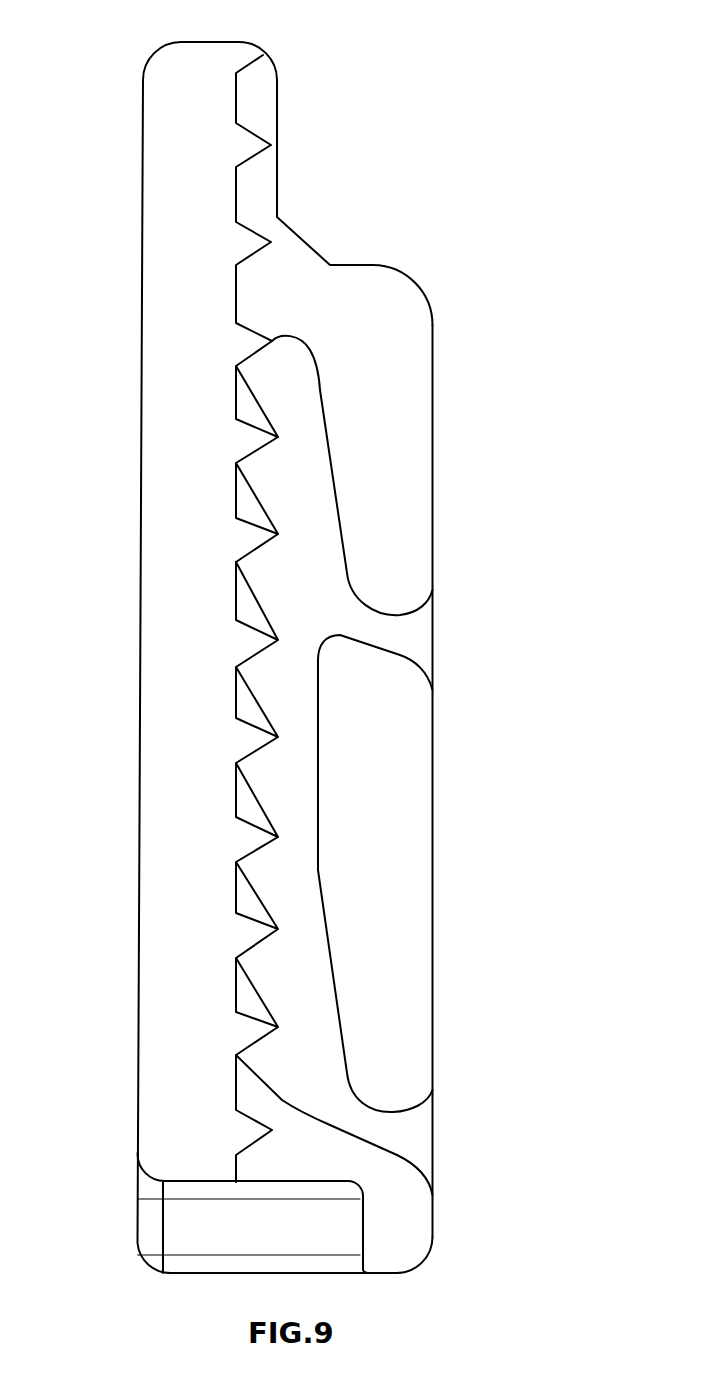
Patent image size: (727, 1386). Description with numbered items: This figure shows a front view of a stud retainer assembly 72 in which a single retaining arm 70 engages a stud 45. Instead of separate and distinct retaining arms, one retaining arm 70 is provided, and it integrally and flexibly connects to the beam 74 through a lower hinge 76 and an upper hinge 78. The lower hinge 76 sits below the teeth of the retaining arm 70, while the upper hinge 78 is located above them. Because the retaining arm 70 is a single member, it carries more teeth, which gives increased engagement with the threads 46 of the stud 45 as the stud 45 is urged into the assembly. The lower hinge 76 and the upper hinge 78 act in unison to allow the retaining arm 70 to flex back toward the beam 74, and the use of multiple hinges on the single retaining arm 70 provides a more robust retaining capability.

The stud 45 is at (158, 312).
The threads 46 is at (253, 242).
The retaining arm 70 is at (312, 418).
The stud retainer assembly 72 is at (332, 167).
The beam 74 is at (457, 857).
The lower hinge 76 is at (422, 1130).
The upper hinge 78 is at (417, 642).